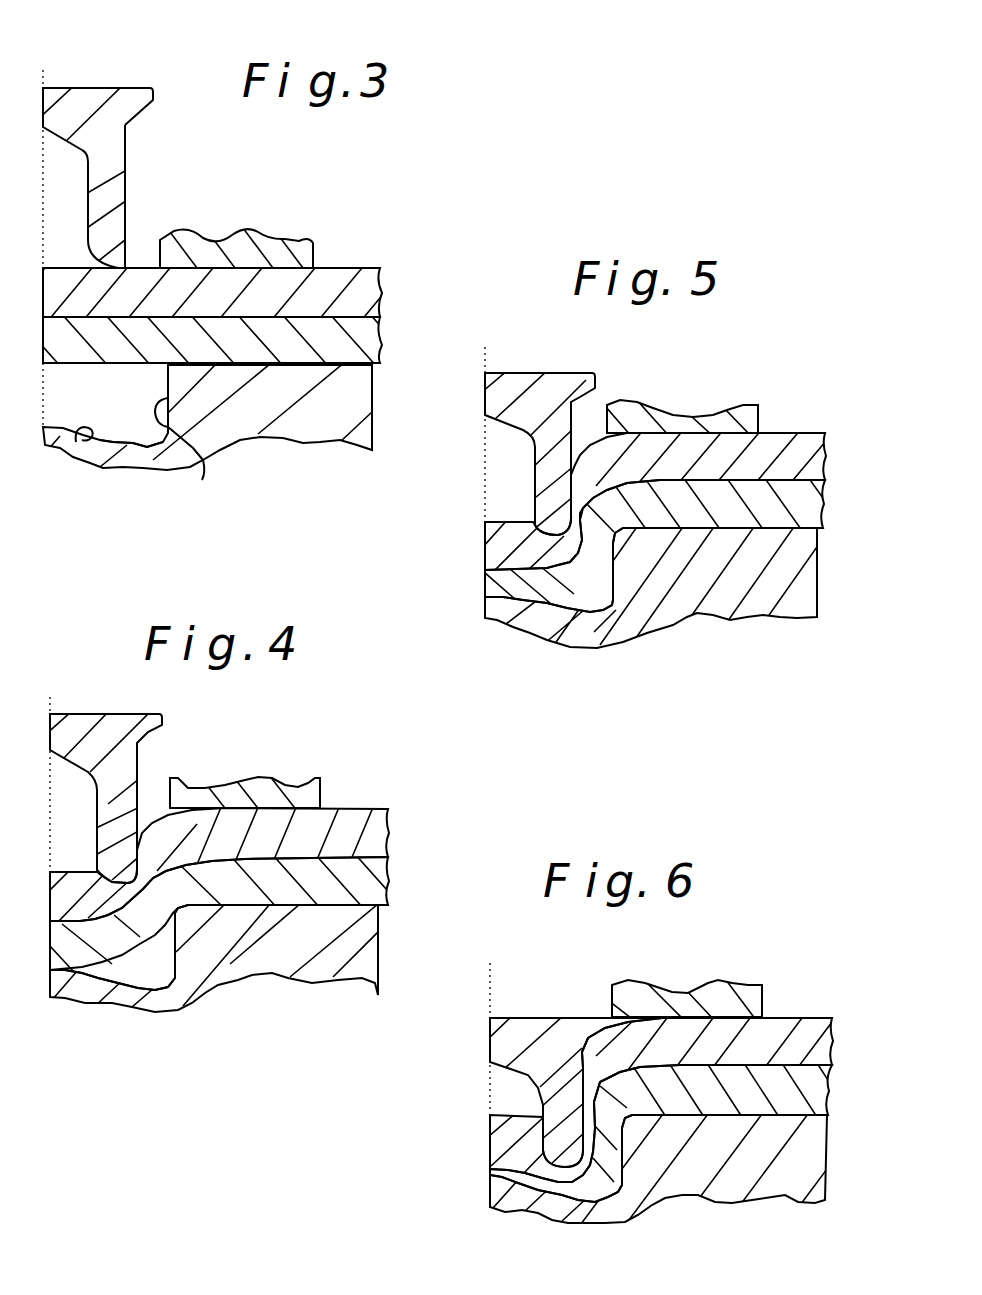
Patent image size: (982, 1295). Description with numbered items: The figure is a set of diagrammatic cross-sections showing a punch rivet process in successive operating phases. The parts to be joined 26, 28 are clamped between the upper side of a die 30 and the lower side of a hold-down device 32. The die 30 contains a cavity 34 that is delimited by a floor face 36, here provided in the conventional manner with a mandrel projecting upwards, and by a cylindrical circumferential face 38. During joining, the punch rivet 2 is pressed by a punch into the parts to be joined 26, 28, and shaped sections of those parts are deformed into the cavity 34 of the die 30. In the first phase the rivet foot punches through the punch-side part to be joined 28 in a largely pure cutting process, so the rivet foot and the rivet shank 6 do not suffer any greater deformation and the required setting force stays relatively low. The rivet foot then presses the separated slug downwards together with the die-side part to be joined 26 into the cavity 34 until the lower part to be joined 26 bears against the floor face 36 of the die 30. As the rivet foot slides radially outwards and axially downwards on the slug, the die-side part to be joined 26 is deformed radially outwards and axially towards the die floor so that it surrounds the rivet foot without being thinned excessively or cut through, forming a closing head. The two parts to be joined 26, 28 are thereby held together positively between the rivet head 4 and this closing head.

In FIG. 3, the punch rivet 2 is at (108, 134).
In FIG. 4, the punch rivet 2 is at (82, 708).
In FIG. 5, the punch rivet 2 is at (546, 366).
In FIG. 6, the punch rivet 2 is at (527, 1013).
In FIG. 3, the rivet head 4 is at (112, 105).
In FIG. 3, the pin shaft 6 is at (112, 193).
In FIG. 3, the die-side part to be joined 26 is at (372, 343).
In FIG. 4, the die-side part to be joined 26 is at (375, 890).
In FIG. 5, the die-side part to be joined 26 is at (483, 586).
In FIG. 6, the die-side part to be joined 26 is at (497, 1178).
In FIG. 3, the punch-side part to be joined 28 is at (373, 290).
In FIG. 4, the punch-side part to be joined 28 is at (380, 831).
In FIG. 5, the punch-side part to be joined 28 is at (487, 551).
In FIG. 6, the punch-side part to be joined 28 is at (797, 1018).
In FIG. 3, the die 30 is at (310, 418).
In FIG. 4, the die 30 is at (233, 962).
In FIG. 5, the die 30 is at (684, 610).
In FIG. 6, the die 30 is at (687, 1180).
In FIG. 3, the hold-down device 32 is at (278, 248).
In FIG. 4, the hold-down device 32 is at (264, 791).
In FIG. 5, the hold-down device 32 is at (684, 423).
In FIG. 6, the hold-down device 32 is at (638, 993).
In FIG. 3, the cavity 34 is at (133, 418).
In FIG. 3, the floor face 36 is at (72, 440).
In FIG. 3, the cylindrical circumferential face 38 is at (202, 480).